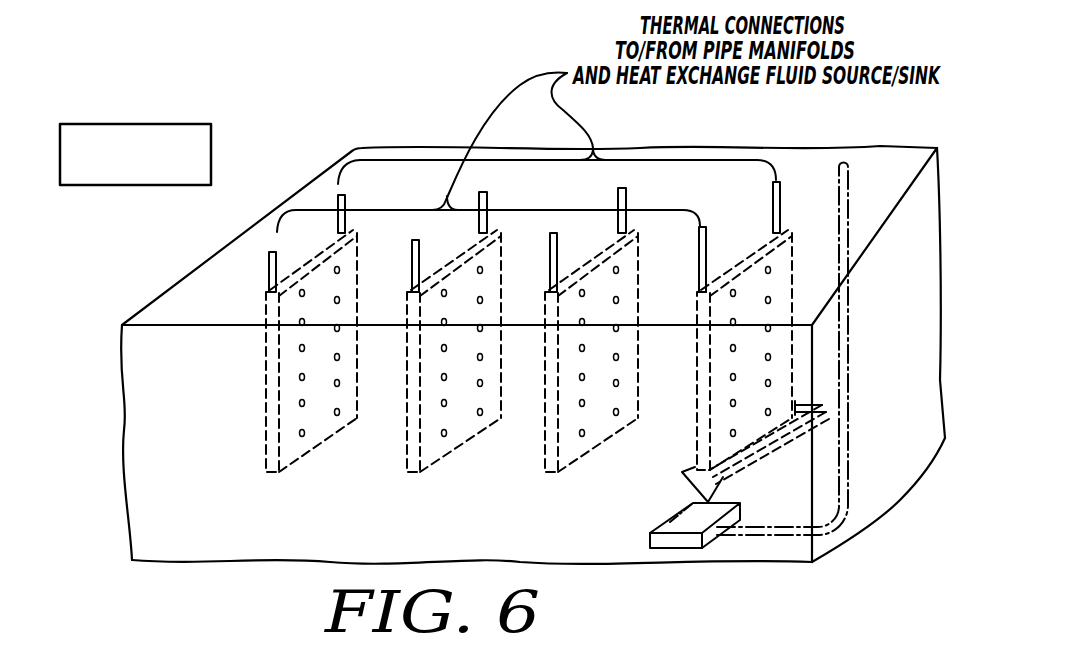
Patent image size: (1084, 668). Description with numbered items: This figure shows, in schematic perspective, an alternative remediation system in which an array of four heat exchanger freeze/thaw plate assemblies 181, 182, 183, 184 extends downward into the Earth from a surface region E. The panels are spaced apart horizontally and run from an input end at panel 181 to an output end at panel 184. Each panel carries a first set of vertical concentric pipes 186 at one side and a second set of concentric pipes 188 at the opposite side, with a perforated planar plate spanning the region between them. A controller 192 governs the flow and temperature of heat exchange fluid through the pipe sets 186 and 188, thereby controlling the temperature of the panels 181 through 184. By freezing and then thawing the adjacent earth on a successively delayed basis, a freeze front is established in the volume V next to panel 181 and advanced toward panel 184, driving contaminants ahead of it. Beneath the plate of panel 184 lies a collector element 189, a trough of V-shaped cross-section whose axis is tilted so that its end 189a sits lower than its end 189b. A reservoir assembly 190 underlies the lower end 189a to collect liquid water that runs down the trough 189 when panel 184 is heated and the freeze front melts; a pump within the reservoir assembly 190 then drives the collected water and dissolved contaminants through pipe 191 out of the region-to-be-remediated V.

The heat exchanger plate assembly 181 is at (303, 323).
The heat exchanger plate assembly 182 is at (408, 447).
The heat exchanger plate assembly 183 is at (546, 447).
The heat exchanger plate assembly 184 is at (698, 437).
The concentric pipes 186 is at (268, 277).
The concentric pipes 188 is at (345, 198).
The collector element 189 is at (746, 472).
The end 189a is at (680, 477).
The end 189b is at (822, 407).
The reservoir assembly 190 is at (668, 522).
The pipe 191 is at (783, 531).
The controller 192 is at (145, 123).
The surface region E is at (172, 292).
The region-to-be-remediated V is at (142, 405).